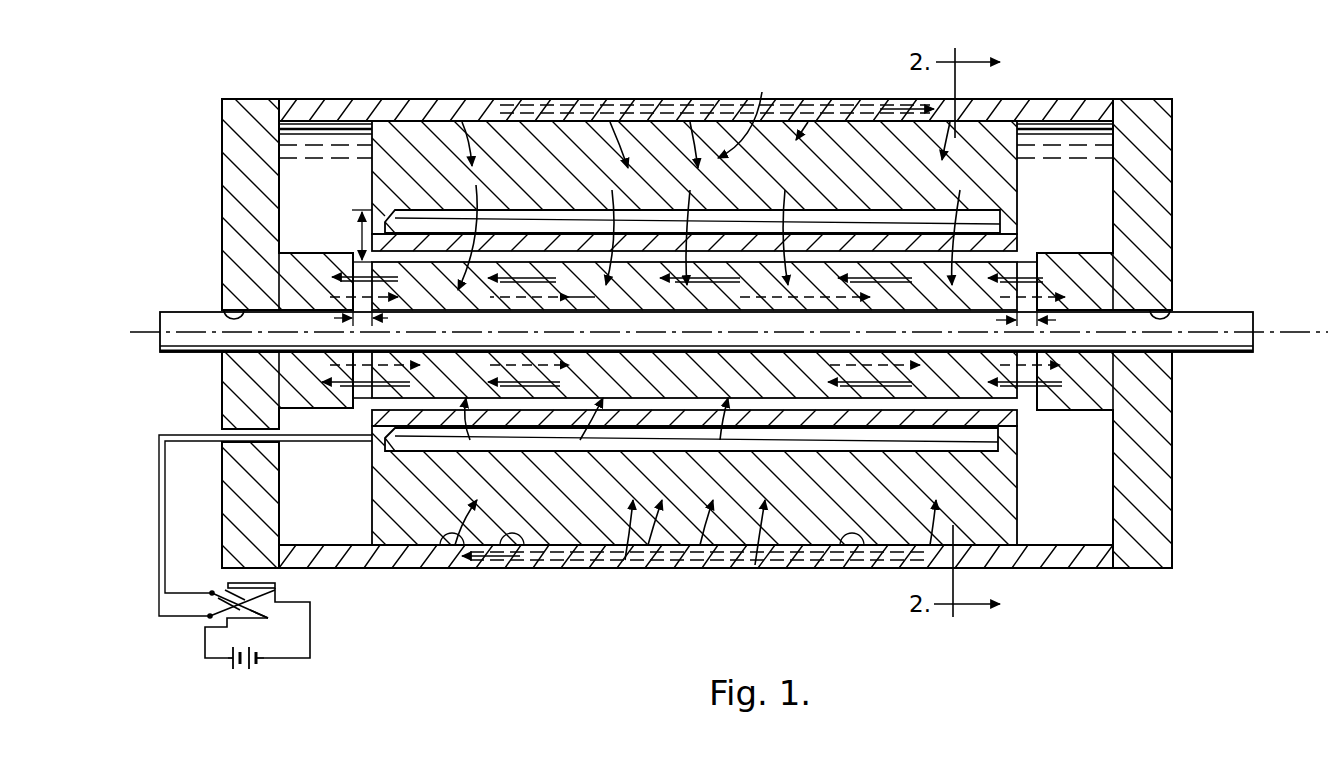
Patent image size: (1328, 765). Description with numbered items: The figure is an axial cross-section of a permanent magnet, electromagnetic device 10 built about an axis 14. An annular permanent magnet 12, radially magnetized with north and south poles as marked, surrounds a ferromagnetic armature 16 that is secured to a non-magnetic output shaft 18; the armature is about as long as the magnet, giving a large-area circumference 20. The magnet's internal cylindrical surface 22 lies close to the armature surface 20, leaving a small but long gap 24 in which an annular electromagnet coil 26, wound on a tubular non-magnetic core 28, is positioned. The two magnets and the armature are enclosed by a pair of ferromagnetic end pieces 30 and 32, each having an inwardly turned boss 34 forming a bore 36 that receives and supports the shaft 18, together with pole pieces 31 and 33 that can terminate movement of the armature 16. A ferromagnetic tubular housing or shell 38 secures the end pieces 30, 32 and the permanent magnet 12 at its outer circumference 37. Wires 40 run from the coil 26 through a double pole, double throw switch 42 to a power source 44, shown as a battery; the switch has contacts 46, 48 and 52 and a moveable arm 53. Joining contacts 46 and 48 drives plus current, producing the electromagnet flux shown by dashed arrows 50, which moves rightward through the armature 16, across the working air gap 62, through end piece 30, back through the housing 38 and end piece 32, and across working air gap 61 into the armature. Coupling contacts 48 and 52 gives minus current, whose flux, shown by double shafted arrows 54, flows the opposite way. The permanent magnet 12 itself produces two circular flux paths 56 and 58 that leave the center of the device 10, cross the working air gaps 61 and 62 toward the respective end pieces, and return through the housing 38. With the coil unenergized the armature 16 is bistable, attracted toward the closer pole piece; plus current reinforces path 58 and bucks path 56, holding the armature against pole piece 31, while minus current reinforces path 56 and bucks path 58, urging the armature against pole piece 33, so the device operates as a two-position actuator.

The permanent magnet, electromagnetic device 10 is at (840, 61).
The permanent magnet 12 is at (1006, 120).
The axis 14 is at (1279, 333).
The armature 16 is at (1012, 266).
The output shaft 18 is at (1250, 316).
The armature surface 20 is at (1004, 240).
The internal cylindrical surface 22 is at (986, 212).
The gap 24 is at (360, 240).
The electromagnet coil 26 is at (386, 214).
The non-magnetic core 28 is at (372, 450).
The end piece 30 is at (1165, 184).
The pole piece 31 is at (1035, 262).
The end piece 32 is at (232, 192).
The pole piece 33 is at (356, 408).
The inwardly turned bosses 34 is at (297, 258).
The bore 36 is at (236, 306).
The outer circumference 37 is at (515, 566).
The tubular housing or shell 38 is at (385, 563).
The wires 40 is at (182, 434).
The double pole, double throw switch 42 is at (233, 604).
The power source 44 is at (258, 680).
The contact 46 is at (216, 610).
The contact 48 is at (276, 587).
The dashed arrow (electromagnet flux current) 50 is at (574, 104).
The contact 52 is at (240, 612).
The moveable arm 53 is at (226, 586).
The double shafted arrows (electromagnet flux current) 54 is at (653, 109).
The permanent magnet flux path 56 is at (468, 122).
The permanent magnet flux path 58 is at (765, 582).
The working air gap 61 is at (375, 319).
The working air gap 62 is at (1041, 320).